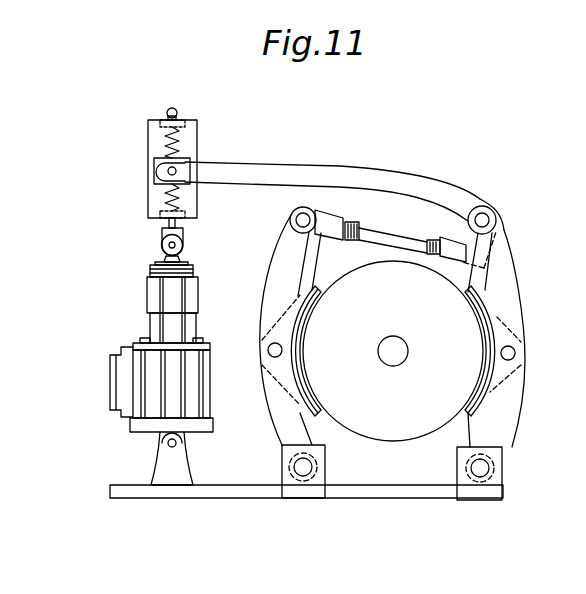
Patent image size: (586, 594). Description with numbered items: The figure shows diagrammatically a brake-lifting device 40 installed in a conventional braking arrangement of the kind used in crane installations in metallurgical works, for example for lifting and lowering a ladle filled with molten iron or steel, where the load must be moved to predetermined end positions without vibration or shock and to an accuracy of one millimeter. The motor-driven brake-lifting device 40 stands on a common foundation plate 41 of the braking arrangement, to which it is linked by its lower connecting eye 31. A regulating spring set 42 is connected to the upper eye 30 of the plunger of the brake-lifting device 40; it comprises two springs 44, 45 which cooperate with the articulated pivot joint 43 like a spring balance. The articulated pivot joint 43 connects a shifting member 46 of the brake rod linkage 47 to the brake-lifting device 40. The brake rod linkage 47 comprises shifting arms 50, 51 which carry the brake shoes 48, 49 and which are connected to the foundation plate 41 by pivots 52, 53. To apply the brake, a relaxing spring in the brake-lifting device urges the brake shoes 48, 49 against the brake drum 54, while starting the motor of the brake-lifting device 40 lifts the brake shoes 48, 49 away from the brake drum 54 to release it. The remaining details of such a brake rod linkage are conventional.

The upper eye 30 is at (160, 248).
The lower connecting eye 31 is at (166, 443).
The brake-lifting device 40 is at (145, 292).
The foundation plate 41 is at (155, 498).
The regulating spring set 42 is at (148, 122).
The articulated pivot joint 43 is at (154, 178).
The spring 44 is at (148, 142).
The spring 45 is at (167, 203).
The shifting member 46 is at (258, 163).
The brake rod linkage 47 is at (481, 188).
The brake shoe 48 is at (320, 305).
The brake shoe 49 is at (460, 238).
The shifting arm 50 is at (270, 427).
The shifting arm 51 is at (513, 448).
The pivot 52 is at (303, 475).
The pivot 53 is at (480, 470).
The brake drum 54 is at (390, 442).